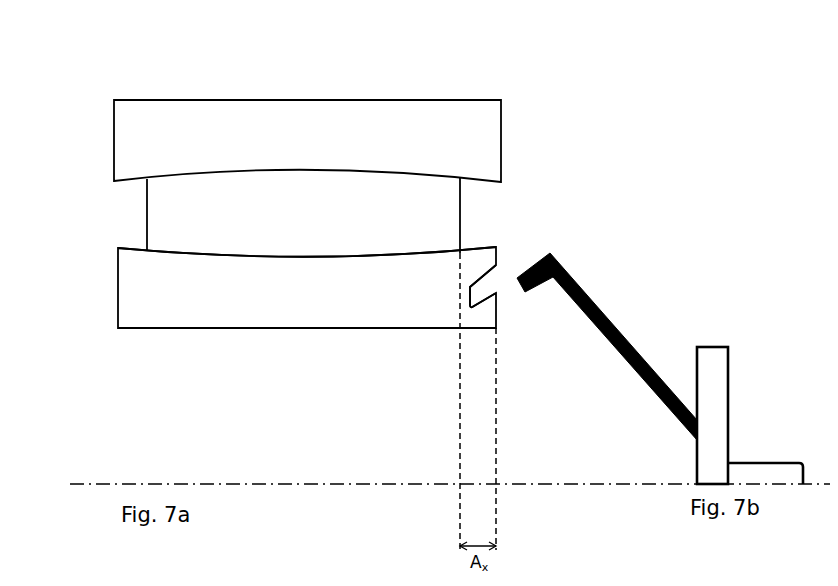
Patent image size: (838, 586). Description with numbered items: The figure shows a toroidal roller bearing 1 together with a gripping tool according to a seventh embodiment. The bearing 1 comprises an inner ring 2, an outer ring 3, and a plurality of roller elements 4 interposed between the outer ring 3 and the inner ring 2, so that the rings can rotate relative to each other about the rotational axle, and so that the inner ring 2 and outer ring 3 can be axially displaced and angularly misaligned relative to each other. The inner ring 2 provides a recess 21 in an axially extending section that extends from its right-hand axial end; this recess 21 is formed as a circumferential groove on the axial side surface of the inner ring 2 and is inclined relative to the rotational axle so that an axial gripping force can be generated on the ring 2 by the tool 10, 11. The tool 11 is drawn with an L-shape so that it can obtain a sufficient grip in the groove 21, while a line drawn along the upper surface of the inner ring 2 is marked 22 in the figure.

In FIG. 7A, the toroidal roller bearing 1 is at (100, 84).
In FIG. 7A, the inner ring 2 is at (118, 295).
In FIG. 7A, the outer ring 3 is at (503, 123).
In FIG. 7A, the roller elements 4 is at (147, 215).
In FIG. 7B, the gripping tool 10 is at (713, 338).
In FIG. 7B, the tool 11 is at (572, 270).
In FIG. 7A, the recess 21 is at (483, 305).
In FIG. 7A, the upper surface of second component 22 is at (322, 258).